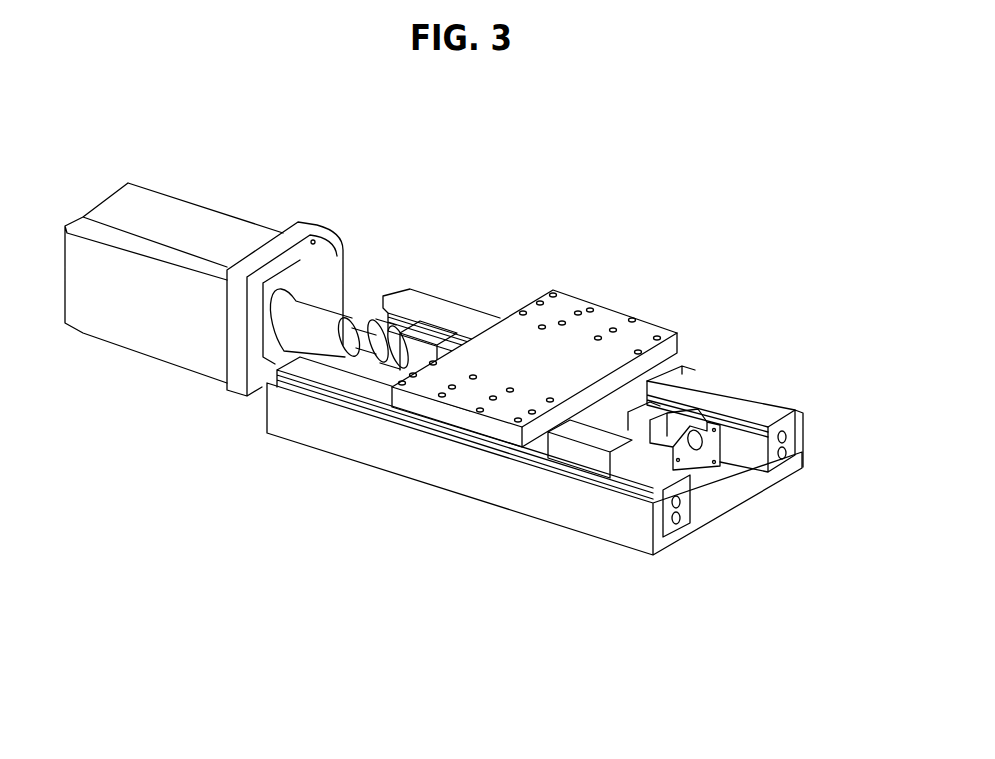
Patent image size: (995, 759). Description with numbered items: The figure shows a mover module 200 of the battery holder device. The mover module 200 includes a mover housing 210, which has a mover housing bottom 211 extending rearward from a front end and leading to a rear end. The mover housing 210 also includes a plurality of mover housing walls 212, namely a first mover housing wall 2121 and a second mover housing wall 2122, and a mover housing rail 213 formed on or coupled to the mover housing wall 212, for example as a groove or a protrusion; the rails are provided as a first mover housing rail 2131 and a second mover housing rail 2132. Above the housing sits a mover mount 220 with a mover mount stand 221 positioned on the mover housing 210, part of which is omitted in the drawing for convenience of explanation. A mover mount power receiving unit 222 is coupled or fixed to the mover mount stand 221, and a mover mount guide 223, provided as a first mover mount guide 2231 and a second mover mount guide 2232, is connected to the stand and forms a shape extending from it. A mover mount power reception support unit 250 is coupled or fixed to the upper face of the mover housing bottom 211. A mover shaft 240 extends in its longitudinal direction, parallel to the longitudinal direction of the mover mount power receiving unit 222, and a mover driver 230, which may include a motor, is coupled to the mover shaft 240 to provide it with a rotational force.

The mover module 200 is at (172, 145).
The mover driver 230 is at (142, 315).
The mover shaft 240 is at (337, 303).
The mover mount power reception support unit 250 is at (393, 325).
The mover housing 210 is at (482, 468).
The mover housing bottom 211 is at (723, 507).
The mover housing wall 212 is at (528, 417).
The first mover housing wall 2121 is at (300, 420).
The second mover housing wall 2122 is at (817, 427).
The mover housing rail 213 is at (626, 413).
The first mover housing rail 2131 is at (587, 455).
The second mover housing rail 2132 is at (721, 324).
The mover mount 220 is at (501, 464).
The mover mount stand 221 is at (602, 330).
The mover mount power receiving unit 222 is at (630, 422).
The mover mount guide 223 is at (530, 390).
The first mover mount guide 2231 is at (537, 448).
The second mover mount guide 2232 is at (692, 343).